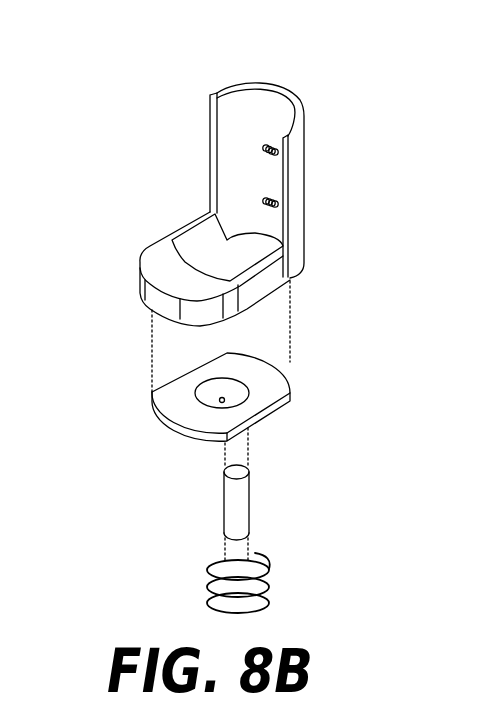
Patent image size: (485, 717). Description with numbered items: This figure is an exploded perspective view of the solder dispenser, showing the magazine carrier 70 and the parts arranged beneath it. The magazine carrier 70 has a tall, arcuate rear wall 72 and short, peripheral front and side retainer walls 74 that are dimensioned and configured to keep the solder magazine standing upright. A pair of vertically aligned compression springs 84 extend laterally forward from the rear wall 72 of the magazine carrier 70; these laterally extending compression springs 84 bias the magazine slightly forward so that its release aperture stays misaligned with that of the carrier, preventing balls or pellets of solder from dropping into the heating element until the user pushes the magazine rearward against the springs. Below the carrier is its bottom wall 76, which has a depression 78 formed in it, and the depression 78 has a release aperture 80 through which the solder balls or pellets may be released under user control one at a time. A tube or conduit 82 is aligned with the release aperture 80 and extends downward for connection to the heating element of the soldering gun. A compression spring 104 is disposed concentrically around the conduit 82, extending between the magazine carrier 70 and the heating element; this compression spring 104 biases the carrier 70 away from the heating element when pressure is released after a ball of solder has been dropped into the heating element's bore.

The magazine carrier 70 is at (270, 179).
The rear wall 72 is at (212, 92).
The front and side retainer walls 74 is at (270, 277).
The bottom wall 76 is at (222, 387).
The depression 78 is at (230, 381).
The release aperture 80 is at (219, 400).
The tube or conduit 82 is at (242, 503).
The compression springs 84 is at (278, 150).
The compression spring 104 is at (268, 578).